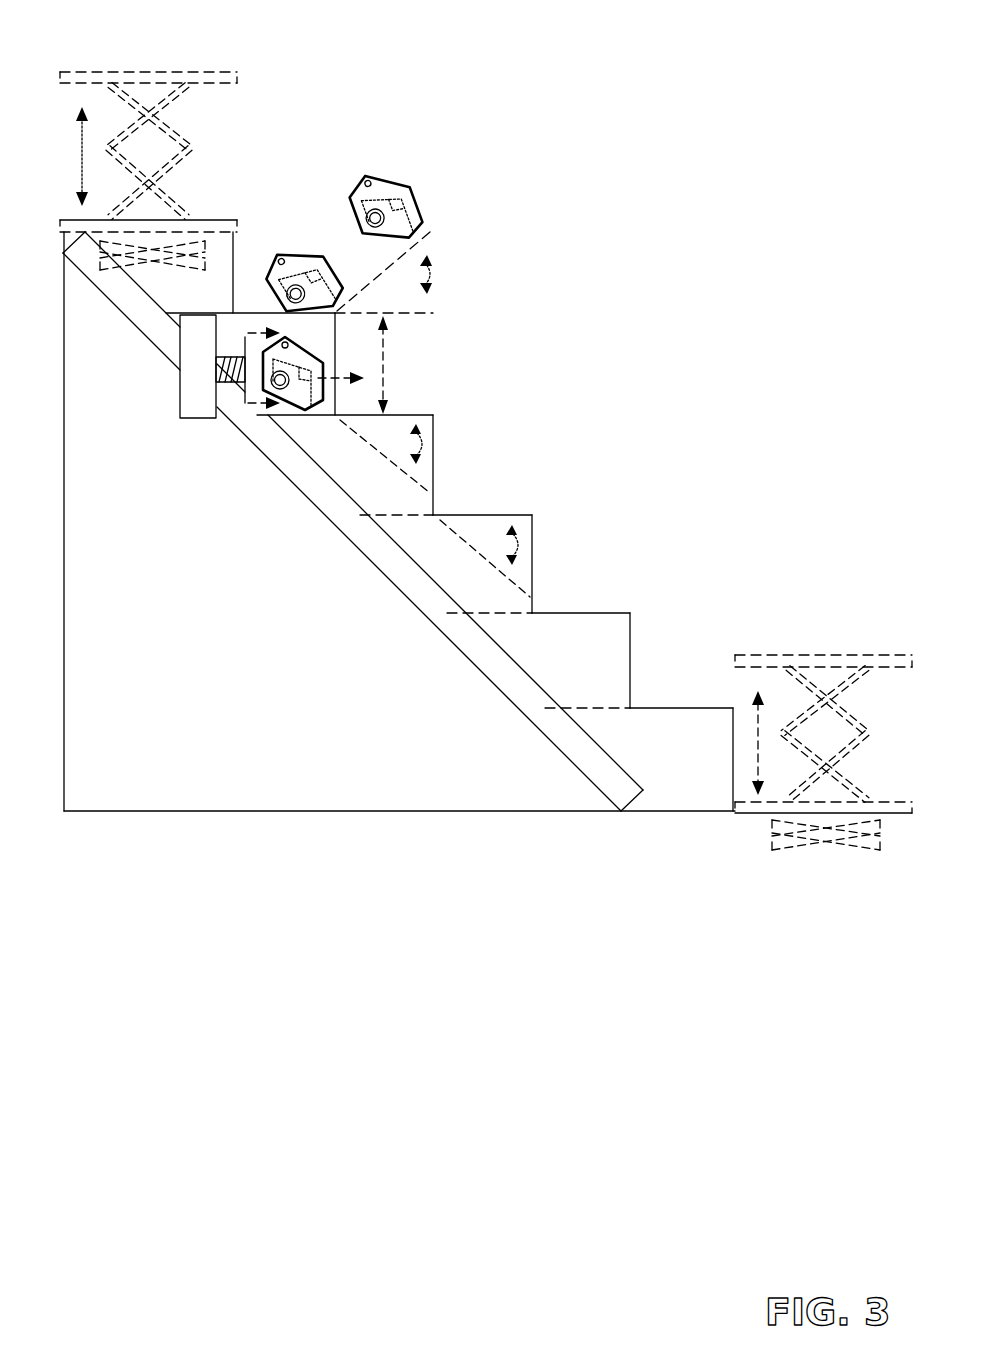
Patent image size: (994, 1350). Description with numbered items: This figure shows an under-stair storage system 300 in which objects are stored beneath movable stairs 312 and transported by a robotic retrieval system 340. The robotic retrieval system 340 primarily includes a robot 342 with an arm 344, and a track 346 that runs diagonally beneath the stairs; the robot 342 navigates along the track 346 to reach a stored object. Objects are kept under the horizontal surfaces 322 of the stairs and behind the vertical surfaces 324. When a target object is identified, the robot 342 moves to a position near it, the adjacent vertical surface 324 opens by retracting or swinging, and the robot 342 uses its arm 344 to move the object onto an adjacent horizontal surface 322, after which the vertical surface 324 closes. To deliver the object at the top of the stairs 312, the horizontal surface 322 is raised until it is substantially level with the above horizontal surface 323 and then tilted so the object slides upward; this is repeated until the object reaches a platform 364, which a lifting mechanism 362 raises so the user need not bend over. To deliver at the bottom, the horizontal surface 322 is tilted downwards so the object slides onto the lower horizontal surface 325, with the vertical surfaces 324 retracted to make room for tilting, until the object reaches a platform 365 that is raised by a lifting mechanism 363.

The under-stair storage system 300 is at (710, 52).
The movable stairs 312 is at (602, 566).
The horizontal surface 322 is at (418, 414).
The above horizontal surface 323 is at (247, 310).
The vertical surface 324 is at (333, 363).
The lower horizontal surface 325 is at (483, 515).
The robotic retrieval system 340 is at (592, 836).
The robot 342 is at (198, 403).
The arm 344 is at (232, 384).
The track 346 is at (138, 312).
The lifting mechanism 362 is at (173, 170).
The lifting mechanism 363 is at (850, 745).
The platform 364 is at (130, 73).
The platform 365 is at (808, 654).